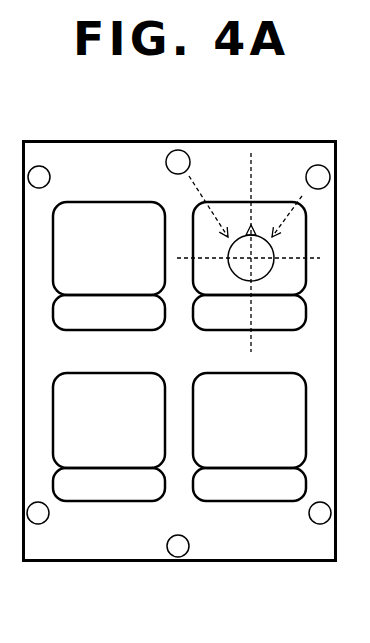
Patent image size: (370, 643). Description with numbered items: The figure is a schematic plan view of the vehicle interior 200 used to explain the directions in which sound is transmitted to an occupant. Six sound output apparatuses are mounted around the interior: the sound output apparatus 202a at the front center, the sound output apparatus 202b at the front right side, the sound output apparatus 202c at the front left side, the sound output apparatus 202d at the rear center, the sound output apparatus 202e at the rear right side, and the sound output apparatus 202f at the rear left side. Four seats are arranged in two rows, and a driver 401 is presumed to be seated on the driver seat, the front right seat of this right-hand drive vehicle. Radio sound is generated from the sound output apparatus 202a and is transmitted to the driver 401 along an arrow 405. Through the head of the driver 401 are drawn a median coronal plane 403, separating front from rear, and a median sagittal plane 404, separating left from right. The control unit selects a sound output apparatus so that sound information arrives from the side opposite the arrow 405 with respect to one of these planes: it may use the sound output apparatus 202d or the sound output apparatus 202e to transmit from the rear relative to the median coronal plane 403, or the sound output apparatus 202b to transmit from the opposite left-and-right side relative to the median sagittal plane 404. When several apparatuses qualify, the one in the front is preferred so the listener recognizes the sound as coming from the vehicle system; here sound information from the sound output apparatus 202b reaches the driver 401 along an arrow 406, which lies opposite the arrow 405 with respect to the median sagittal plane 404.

The vehicle interior 200 is at (108, 140).
The sound output apparatus 202a is at (175, 150).
The sound output apparatus 202b is at (313, 166).
The sound output apparatus 202c is at (38, 166).
The sound output apparatus 202d is at (181, 557).
The sound output apparatus 202e is at (320, 524).
The sound output apparatus 202f is at (40, 524).
The driver 401 is at (255, 281).
The median coronal plane 403 is at (203, 259).
The median sagittal plane 404 is at (250, 335).
The arrow 405 is at (197, 192).
The arrow 406 is at (305, 193).